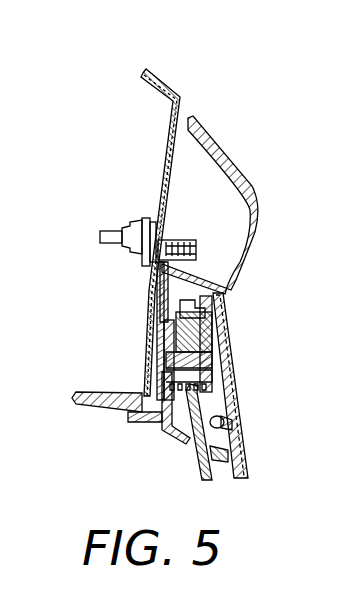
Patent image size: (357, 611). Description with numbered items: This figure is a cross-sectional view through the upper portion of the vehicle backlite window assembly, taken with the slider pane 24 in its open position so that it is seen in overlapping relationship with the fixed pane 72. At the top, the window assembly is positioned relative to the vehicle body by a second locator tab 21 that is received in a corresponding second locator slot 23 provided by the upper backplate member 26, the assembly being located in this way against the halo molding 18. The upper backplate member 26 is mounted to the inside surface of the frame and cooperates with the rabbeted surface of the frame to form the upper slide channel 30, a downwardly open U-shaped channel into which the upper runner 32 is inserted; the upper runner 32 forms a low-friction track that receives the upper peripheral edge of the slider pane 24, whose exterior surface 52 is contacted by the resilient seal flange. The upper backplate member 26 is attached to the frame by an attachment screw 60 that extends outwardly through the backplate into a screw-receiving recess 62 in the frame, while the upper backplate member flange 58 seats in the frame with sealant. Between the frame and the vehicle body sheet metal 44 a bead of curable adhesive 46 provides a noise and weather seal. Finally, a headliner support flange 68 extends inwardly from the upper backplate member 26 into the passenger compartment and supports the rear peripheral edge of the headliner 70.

The halo molding 18 is at (235, 153).
The second locator tab 21 is at (152, 312).
The second locator slot 23 is at (225, 330).
The slider pane 24 is at (195, 448).
The upper backplate member 26 is at (160, 432).
The upper slide channel 30 is at (232, 425).
The upper runner 32 is at (232, 400).
The sheet metal 44 is at (167, 155).
The curable adhesive 46 is at (152, 345).
The exterior surface 52 is at (217, 465).
The upper backplate member flange 58 is at (152, 282).
The attachment screw 60 is at (148, 367).
The screw-receiving recess 62 is at (228, 368).
The headliner support flange 68 is at (140, 420).
The headliner 70 is at (90, 392).
The fixed pane 72 is at (245, 450).